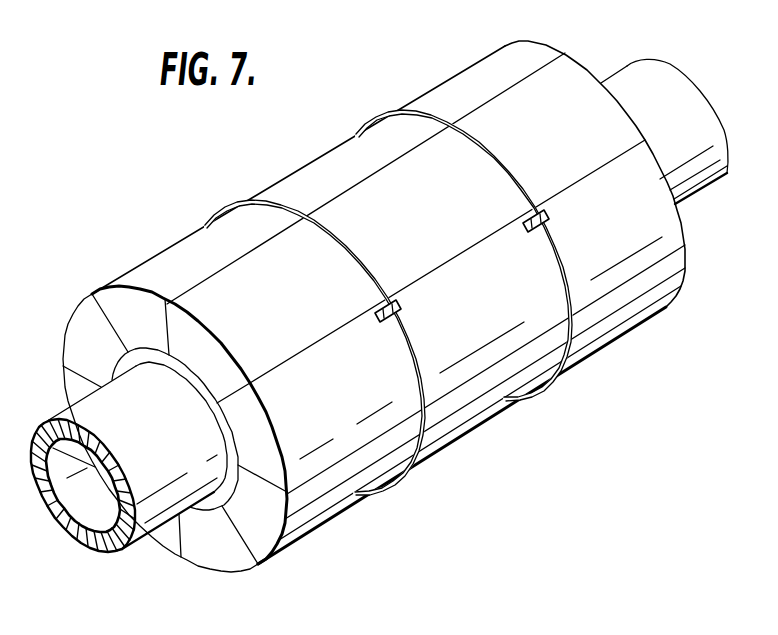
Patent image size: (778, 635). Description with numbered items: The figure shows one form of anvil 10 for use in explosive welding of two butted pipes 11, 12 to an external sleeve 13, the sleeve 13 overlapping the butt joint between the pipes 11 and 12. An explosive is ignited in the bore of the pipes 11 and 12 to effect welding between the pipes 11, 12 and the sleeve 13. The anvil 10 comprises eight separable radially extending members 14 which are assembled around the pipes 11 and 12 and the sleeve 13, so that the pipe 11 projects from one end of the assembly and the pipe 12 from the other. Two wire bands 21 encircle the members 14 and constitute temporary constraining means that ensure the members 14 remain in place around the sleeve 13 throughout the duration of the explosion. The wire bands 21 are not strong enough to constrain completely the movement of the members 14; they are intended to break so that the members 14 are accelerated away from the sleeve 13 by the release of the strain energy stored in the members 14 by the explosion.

The anvil 10 is at (476, 432).
The pipe 11 is at (147, 541).
The pipe 12 is at (627, 82).
The external sleeve 13 is at (127, 362).
The radially extending members 14 is at (214, 556).
The wire bands 21 is at (216, 219).